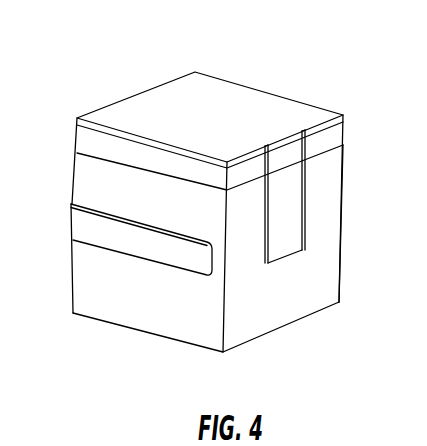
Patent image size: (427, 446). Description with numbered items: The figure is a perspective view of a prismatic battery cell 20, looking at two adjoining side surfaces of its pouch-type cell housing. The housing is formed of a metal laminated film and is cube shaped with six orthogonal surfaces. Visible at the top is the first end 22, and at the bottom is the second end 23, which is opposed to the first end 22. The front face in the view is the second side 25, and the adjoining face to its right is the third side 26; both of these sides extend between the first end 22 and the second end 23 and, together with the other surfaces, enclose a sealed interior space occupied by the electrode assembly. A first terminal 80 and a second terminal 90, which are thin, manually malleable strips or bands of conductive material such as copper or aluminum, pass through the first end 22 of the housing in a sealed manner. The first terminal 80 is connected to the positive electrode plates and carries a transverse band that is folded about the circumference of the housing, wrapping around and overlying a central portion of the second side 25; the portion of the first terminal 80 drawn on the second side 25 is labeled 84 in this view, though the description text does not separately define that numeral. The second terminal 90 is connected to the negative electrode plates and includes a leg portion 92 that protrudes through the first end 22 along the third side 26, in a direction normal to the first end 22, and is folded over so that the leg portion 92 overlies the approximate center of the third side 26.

The cell 20 is at (152, 60).
The first end 22 is at (255, 102).
The second end 23 is at (299, 324).
The second side 25 is at (85, 283).
The third side 26 is at (330, 248).
The first terminal 80 is at (137, 292).
The opening 84 is at (149, 243).
The second terminal 90 is at (331, 196).
The leg portion 92 is at (292, 210).